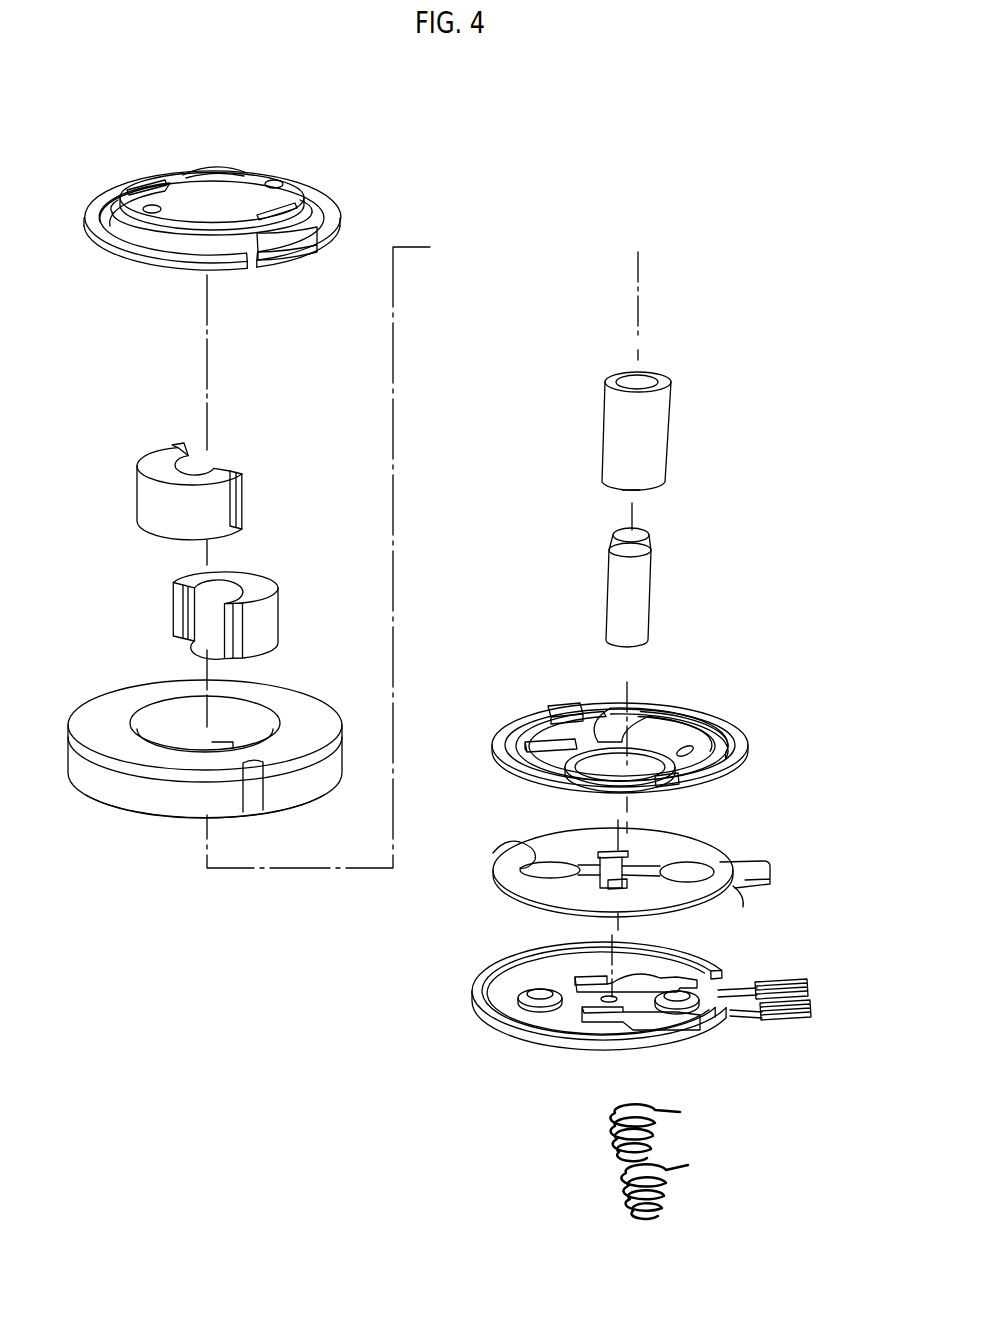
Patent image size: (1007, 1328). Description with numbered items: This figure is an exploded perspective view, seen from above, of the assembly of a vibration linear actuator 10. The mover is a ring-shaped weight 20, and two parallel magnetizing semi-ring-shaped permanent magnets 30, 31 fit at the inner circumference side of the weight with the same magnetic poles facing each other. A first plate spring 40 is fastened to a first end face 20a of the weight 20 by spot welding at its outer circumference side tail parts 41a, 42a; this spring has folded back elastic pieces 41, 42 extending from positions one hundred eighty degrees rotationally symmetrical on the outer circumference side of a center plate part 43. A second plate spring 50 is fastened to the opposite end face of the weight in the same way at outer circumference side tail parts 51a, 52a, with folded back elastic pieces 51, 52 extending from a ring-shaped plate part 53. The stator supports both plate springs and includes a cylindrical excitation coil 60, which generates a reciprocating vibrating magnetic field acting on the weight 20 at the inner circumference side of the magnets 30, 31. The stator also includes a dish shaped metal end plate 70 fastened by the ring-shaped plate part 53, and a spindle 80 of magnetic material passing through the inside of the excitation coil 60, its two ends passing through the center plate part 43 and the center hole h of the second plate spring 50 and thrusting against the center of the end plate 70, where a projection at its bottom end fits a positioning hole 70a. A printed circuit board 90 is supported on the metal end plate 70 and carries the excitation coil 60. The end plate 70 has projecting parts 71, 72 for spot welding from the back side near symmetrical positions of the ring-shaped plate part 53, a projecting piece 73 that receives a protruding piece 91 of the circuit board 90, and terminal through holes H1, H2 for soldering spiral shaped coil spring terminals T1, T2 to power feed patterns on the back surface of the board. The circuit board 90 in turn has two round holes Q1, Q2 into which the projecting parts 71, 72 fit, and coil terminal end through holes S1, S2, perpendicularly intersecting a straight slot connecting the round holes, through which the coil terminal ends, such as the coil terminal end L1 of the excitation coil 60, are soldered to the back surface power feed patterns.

The vibration linear actuator 10 is at (97, 62).
The ring-shaped weight 20 is at (103, 767).
The first end face 20a is at (98, 703).
The semi-ring-shaped permanent magnet 30 is at (165, 500).
The semi-ring-shaped permanent magnet 31 is at (262, 606).
The first plate spring 40 is at (276, 168).
The folded back elastic piece 41 is at (125, 250).
The outer circumference side tail part 41a is at (116, 193).
The folded back elastic piece 42 is at (327, 203).
The outer circumference side tail part 42a is at (272, 262).
The center plate part 43 is at (208, 198).
The second plate spring 50 is at (693, 703).
The folded back elastic piece 51 is at (503, 742).
The outer circumference side tail part 51a is at (557, 706).
The folded back elastic piece 52 is at (748, 748).
The outer circumference side tail part 52a is at (680, 787).
The ring-shaped plate part 53 is at (530, 750).
The cylindrical excitation coil 60 is at (652, 445).
The dish shaped metal end plate 70 is at (475, 1018).
The positioning hole 70a is at (600, 999).
The projecting part 71 is at (537, 992).
The projecting part 72 is at (763, 966).
The projecting piece 73 is at (792, 998).
The spindle 80 is at (655, 565).
The printed circuit board 90 is at (492, 883).
The protruding piece 91 is at (770, 873).
The coil terminal end L1 is at (625, 495).
The coil terminal end through hole S1 is at (600, 888).
The coil terminal end through hole S2 is at (606, 852).
The round hole Q1 is at (495, 852).
The round hole Q2 is at (745, 900).
The terminal through hole H1 is at (647, 1027).
The terminal through hole H2 is at (657, 975).
The center hole h is at (637, 768).
The spiral shaped coil spring terminal T1 is at (660, 1197).
The spiral shaped coil spring terminal T2 is at (620, 1125).